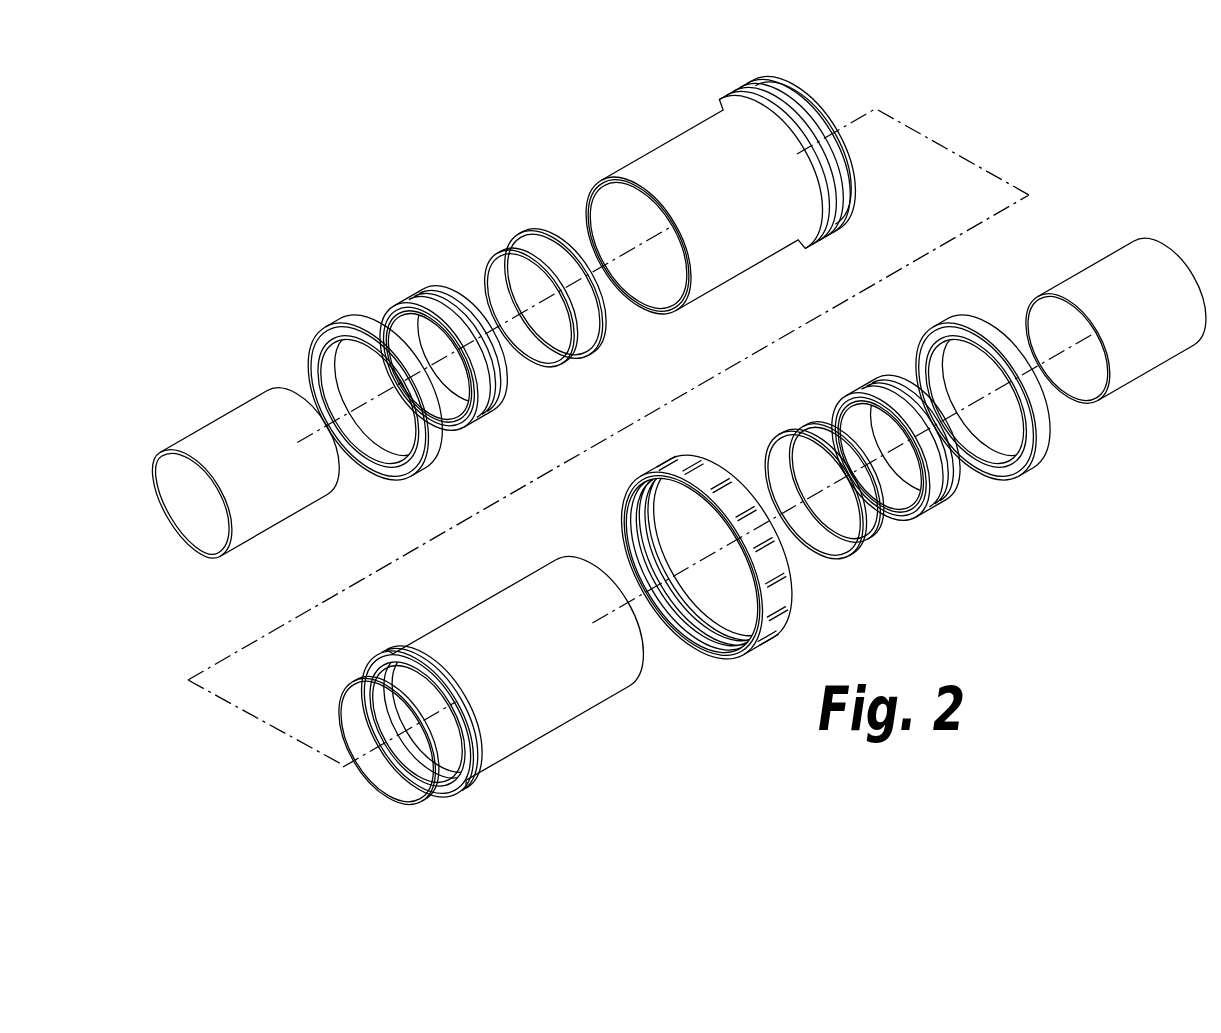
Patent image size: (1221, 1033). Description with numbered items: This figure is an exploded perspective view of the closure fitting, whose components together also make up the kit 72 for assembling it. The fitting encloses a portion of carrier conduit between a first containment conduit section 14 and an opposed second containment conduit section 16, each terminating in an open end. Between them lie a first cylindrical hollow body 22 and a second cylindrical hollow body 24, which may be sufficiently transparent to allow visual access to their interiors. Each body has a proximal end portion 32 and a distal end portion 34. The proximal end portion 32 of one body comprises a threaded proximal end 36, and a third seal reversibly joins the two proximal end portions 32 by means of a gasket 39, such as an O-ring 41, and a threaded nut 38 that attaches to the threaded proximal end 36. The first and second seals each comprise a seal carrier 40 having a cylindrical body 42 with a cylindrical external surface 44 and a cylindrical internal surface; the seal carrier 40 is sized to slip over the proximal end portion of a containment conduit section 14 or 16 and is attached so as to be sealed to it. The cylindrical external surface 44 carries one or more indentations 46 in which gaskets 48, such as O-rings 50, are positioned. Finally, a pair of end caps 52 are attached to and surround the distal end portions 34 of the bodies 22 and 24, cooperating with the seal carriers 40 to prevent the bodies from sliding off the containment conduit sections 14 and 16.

The first containment conduit section 14 is at (231, 422).
The second containment conduit section 16 is at (1137, 370).
The first cylindrical hollow body 22 is at (672, 160).
The second cylindrical hollow body 24 is at (551, 720).
The proximal end portion 32 is at (814, 98).
The distal end portion 34 is at (593, 187).
The threaded proximal end 36 is at (754, 85).
The threaded nut 38 is at (766, 626).
The gasket 39 is at (346, 703).
The seal carrier 40 is at (409, 298).
The O-ring 41 is at (375, 776).
The cylindrical body 42 is at (469, 410).
The cylindrical external surface 44 is at (485, 397).
The indentations 46 is at (415, 300).
The gaskets 48 is at (548, 247).
The O-rings 50 is at (582, 350).
The end caps 52 is at (353, 328).
The kit 72 is at (522, 154).